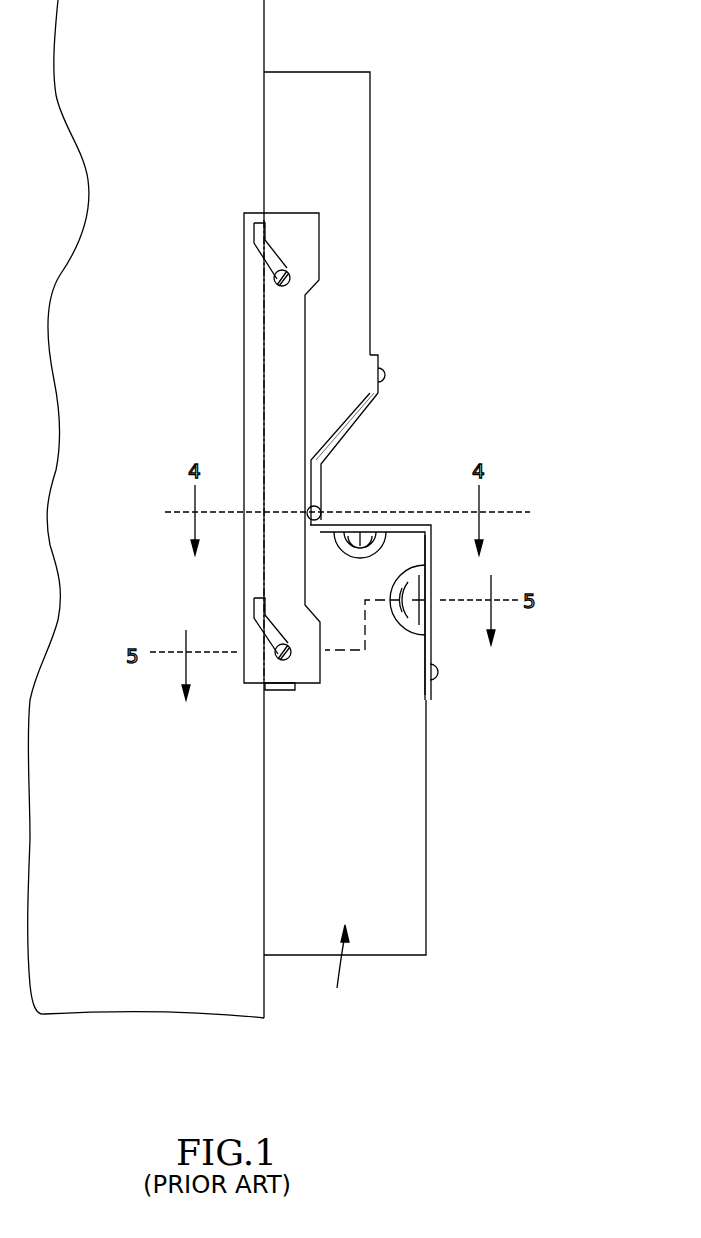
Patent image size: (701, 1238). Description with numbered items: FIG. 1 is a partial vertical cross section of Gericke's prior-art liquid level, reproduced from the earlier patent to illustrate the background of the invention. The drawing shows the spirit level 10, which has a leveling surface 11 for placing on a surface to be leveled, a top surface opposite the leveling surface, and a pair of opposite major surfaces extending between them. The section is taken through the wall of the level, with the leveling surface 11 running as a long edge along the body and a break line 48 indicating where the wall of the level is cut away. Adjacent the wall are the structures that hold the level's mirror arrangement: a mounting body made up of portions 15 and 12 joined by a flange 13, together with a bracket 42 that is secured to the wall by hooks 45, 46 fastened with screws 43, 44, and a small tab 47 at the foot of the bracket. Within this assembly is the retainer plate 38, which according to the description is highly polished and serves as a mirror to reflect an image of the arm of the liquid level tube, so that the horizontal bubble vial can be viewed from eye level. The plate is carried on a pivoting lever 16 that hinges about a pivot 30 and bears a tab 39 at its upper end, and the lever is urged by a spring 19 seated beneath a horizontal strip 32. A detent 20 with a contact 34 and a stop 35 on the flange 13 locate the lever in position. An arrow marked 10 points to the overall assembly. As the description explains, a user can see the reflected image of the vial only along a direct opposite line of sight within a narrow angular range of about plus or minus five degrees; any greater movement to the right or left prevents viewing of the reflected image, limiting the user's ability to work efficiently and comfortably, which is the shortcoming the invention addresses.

The spirit level 10 is at (332, 972).
The leveling surface 11 is at (264, 153).
The lower panel section 12 is at (426, 858).
The flange 13 is at (426, 540).
The upper panel section 15 is at (370, 170).
The lever arm 16 is at (358, 410).
The spring 19 is at (360, 545).
The detent 20 is at (412, 618).
The pivot pin 30 is at (321, 505).
The horizontal strip 32 is at (408, 525).
The contact 34 is at (428, 604).
The stop 35 is at (437, 678).
The retainer plate 38 is at (356, 434).
The tab 39 is at (383, 376).
The bracket 42 is at (244, 380).
The screw 43 is at (272, 281).
The screw 44 is at (283, 660).
The hook 45 is at (254, 234).
The hook 46 is at (254, 610).
The tab 47 is at (284, 690).
The wall break line 48 is at (192, 982).